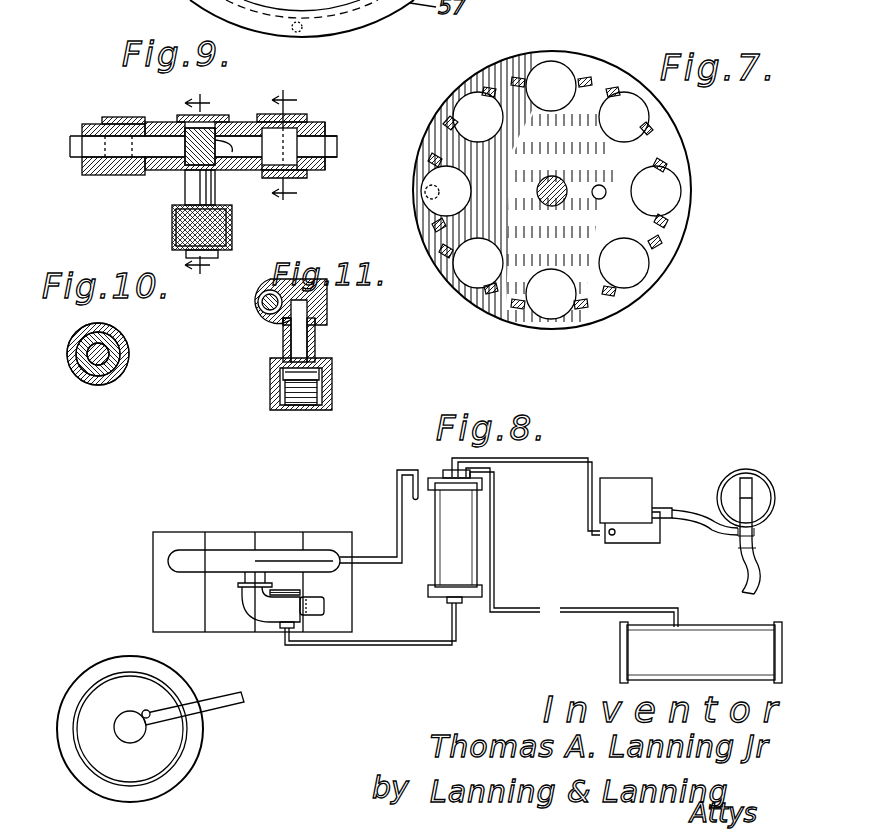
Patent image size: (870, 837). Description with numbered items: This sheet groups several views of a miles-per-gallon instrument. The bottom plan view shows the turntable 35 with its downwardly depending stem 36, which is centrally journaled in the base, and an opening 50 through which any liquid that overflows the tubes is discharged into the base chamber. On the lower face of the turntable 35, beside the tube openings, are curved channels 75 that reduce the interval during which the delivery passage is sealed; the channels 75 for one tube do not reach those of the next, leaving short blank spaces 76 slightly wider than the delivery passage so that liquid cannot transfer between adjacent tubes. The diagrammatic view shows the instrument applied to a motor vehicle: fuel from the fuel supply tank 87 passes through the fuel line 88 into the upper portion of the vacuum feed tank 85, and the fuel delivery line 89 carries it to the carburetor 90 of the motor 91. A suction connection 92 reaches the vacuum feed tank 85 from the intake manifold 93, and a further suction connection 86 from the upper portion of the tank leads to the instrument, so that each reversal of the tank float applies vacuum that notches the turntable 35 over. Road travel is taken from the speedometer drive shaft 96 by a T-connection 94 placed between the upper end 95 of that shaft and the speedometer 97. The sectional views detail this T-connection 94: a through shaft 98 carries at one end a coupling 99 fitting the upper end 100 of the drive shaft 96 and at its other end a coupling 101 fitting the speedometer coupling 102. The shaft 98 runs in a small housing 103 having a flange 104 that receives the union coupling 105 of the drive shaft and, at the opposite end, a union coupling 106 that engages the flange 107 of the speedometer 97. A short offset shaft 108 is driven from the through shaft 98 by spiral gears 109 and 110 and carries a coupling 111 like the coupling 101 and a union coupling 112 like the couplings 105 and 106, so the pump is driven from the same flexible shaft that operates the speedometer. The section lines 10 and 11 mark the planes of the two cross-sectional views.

In FIG. 7, the turntable 35 is at (637, 160).
In FIG. 7, the stem 36 is at (547, 178).
In FIG. 7, the opening 50 is at (597, 199).
In FIG. 7, the curved channels 75 is at (580, 76).
In FIG. 7, the blank spaces 76 is at (596, 90).
In FIG. 8, the vacuum feed tank 85 is at (468, 514).
In FIG. 8, the suction connection 86 is at (578, 456).
In FIG. 8, the fuel supply tank 87 is at (725, 632).
In FIG. 8, the fuel line 88 is at (495, 573).
In FIG. 8, the fuel delivery line 89 is at (405, 648).
In FIG. 8, the carburetor 90 is at (275, 612).
In FIG. 8, the motor 91 is at (170, 604).
In FIG. 8, the suction connection 92 is at (396, 478).
In FIG. 8, the intake manifold 93 is at (225, 558).
In FIG. 9, the T-connection 94 is at (165, 172).
In FIG. 8, the T-connection 94 is at (733, 540).
In FIG. 9, the upper end of speedometer drive shaft 95 is at (318, 168).
In FIG. 8, the upper end of speedometer drive shaft 95 is at (742, 566).
In FIG. 8, the speedometer drive shaft 96 is at (218, 706).
In FIG. 8, the speedometer 97 is at (727, 467).
In FIG. 9, the through shaft 98 is at (163, 133).
In FIG. 11, the through shaft 98 is at (268, 282).
In FIG. 9, the coupling 99 is at (285, 177).
In FIG. 10, the coupling 99 is at (129, 356).
In FIG. 9, the upper end of drive shaft 100 is at (330, 143).
In FIG. 10, the upper end of drive shaft 100 is at (67, 352).
In FIG. 9, the coupling 101 is at (145, 120).
In FIG. 9, the speedometer coupling 102 is at (105, 118).
In FIG. 11, the housing 103 is at (272, 332).
In FIG. 9, the flange 104 is at (300, 117).
In FIG. 10, the flange 104 is at (119, 336).
In FIG. 9, the union coupling 105 is at (245, 125).
In FIG. 10, the union coupling 105 is at (76, 325).
In FIG. 9, the union coupling 106 is at (118, 176).
In FIG. 9, the flange 107 is at (72, 160).
In FIG. 11, the offset shaft 108 is at (302, 337).
In FIG. 9, the spiral gear 109 is at (250, 180).
In FIG. 11, the spiral gear 109 is at (262, 325).
In FIG. 11, the spiral gear 110 is at (325, 296).
In FIG. 11, the coupling 111 is at (270, 402).
In FIG. 9, the union coupling 112 is at (172, 232).
In FIG. 11, the union coupling 112 is at (334, 388).
In FIG. 9, the section line 10— 10 is at (283, 148).
In FIG. 9, the section line 11— 11 is at (200, 182).